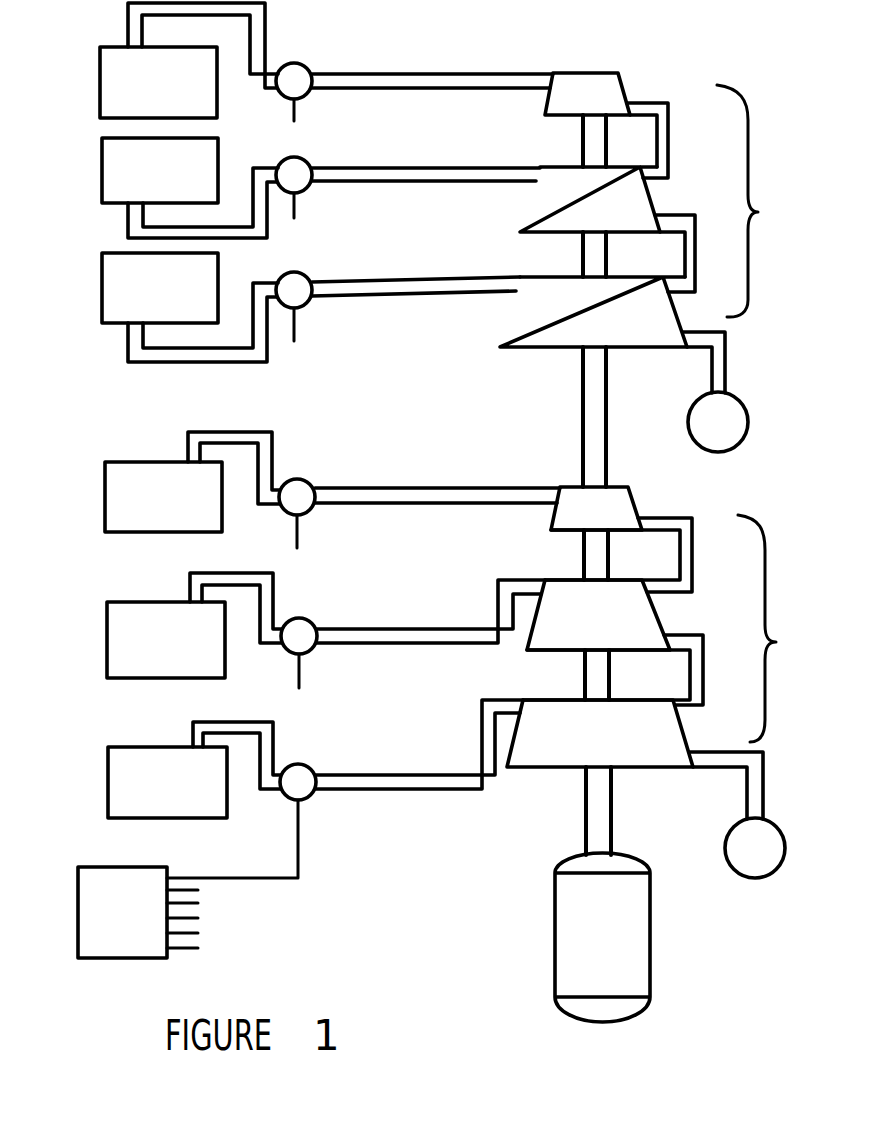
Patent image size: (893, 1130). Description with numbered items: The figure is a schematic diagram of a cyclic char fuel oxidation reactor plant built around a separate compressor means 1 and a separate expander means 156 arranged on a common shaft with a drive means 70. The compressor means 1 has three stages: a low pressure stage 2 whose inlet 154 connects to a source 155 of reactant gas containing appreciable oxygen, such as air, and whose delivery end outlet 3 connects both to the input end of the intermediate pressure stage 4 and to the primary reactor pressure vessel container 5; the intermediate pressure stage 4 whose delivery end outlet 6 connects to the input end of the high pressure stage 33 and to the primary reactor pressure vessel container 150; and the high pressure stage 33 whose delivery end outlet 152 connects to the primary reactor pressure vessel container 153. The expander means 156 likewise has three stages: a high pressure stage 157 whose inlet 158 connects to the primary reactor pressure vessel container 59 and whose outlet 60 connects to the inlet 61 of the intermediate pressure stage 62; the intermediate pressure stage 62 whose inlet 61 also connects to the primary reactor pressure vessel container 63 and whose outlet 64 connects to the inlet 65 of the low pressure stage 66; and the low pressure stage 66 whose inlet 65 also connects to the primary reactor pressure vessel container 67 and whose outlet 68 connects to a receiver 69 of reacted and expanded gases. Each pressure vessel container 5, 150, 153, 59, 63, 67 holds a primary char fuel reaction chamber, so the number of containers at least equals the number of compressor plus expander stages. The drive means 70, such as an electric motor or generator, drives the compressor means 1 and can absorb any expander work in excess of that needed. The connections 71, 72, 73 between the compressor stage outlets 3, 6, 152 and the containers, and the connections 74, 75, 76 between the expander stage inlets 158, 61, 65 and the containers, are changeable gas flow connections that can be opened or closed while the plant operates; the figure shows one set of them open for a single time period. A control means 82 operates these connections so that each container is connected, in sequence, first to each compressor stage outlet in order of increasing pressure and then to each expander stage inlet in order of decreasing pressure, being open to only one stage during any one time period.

The compressor means 1 is at (766, 628).
The low pressure stage 2 is at (657, 737).
The delivery end outlet 3 is at (503, 715).
The intermediate pressure stage 4 is at (643, 622).
The primary reactor pressure vessel container 5 is at (183, 803).
The delivery end outlet 6 is at (527, 587).
The high pressure stage 33 is at (618, 505).
The primary reactor pressure vessel container 59 is at (115, 82).
The outlet 60 is at (660, 112).
The inlet 61 is at (497, 165).
The intermediate pressure stage 62 is at (627, 203).
The primary reactor pressure vessel container 63 is at (107, 166).
The outlet 64 is at (693, 248).
The inlet 65 is at (490, 273).
The low pressure stage 66 is at (555, 327).
The primary reactor pressure vessel container 67 is at (108, 292).
The outlet 68 is at (724, 356).
The receiver 69 is at (730, 417).
The drive means 70 is at (568, 948).
The connection 71 is at (307, 798).
The connection 72 is at (309, 653).
The connection 73 is at (307, 515).
The connection 74 is at (291, 62).
The connection 75 is at (291, 156).
The connection 76 is at (291, 271).
The control means 82 is at (113, 883).
The primary reactor pressure vessel container 150 is at (213, 653).
The delivery end outlet 152 is at (548, 484).
The primary reactor pressure vessel container 153 is at (213, 510).
The inlet 154 is at (723, 760).
The source 155 is at (737, 852).
The expander means 156 is at (762, 201).
The high pressure stage 157 is at (600, 82).
The inlet 158 is at (512, 72).